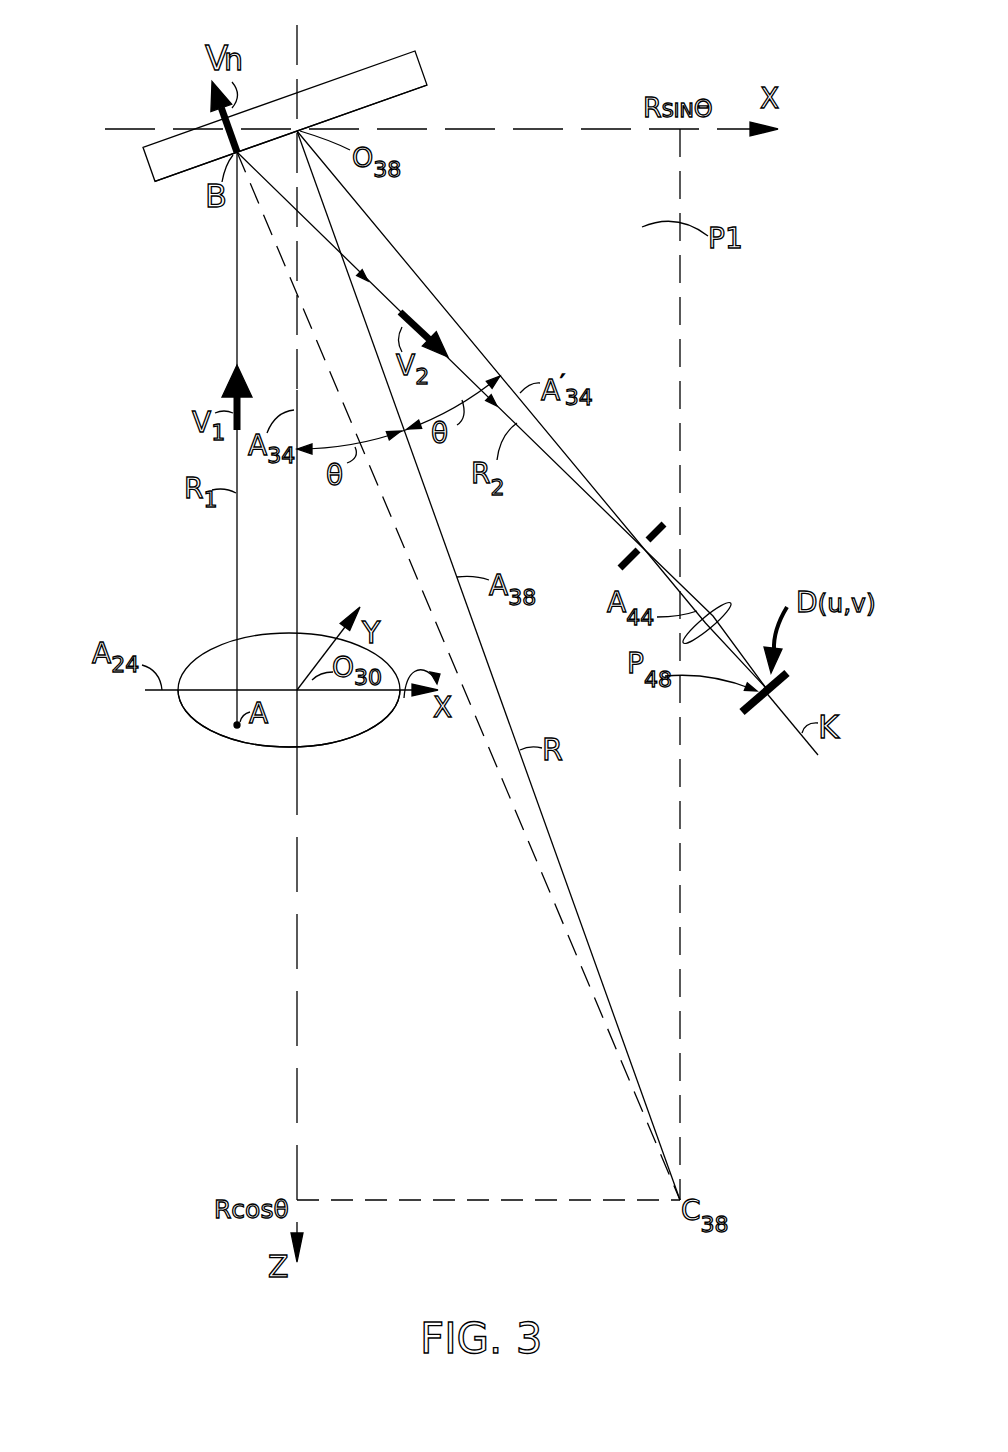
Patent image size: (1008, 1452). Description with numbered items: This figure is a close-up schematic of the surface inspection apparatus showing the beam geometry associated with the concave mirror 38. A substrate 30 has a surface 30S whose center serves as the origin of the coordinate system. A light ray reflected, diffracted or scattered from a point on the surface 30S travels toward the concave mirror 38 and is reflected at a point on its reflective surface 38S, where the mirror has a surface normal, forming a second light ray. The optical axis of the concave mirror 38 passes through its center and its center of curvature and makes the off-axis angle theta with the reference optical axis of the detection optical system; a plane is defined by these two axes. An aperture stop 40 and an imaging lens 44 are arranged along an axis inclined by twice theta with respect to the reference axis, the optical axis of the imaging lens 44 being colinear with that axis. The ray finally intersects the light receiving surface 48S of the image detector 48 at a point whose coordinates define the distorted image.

The substrate 30 is at (192, 722).
The surface 30S is at (333, 720).
The concave mirror 38 is at (423, 78).
The reflective surface 38S is at (367, 106).
The aperture stop 40 is at (647, 530).
The imaging lens 44 is at (722, 608).
The image detector 48 is at (782, 677).
The light receiving surface 48S is at (745, 703).